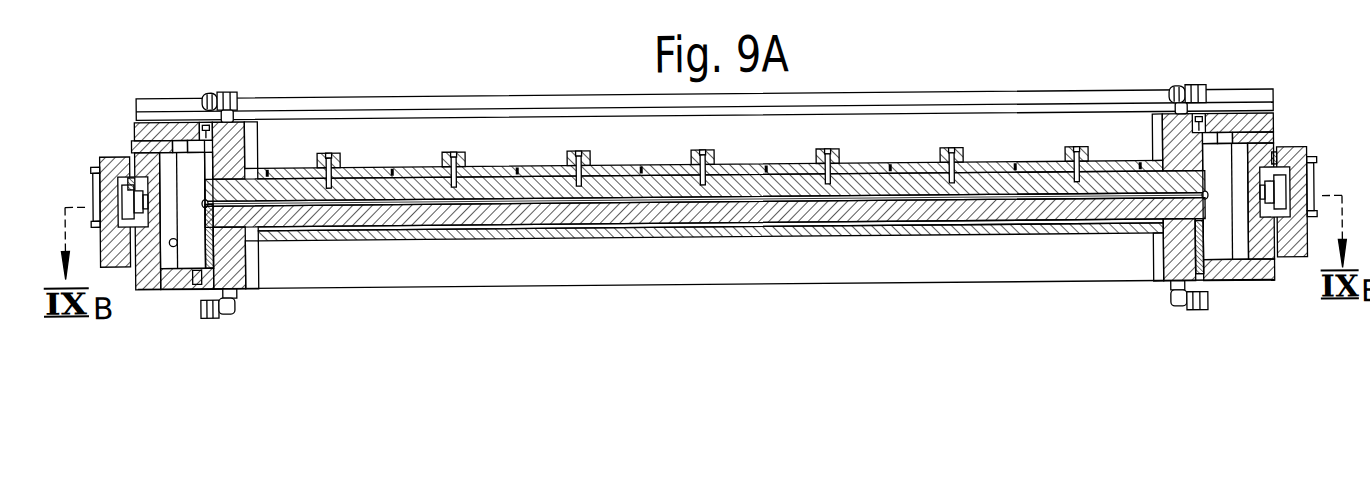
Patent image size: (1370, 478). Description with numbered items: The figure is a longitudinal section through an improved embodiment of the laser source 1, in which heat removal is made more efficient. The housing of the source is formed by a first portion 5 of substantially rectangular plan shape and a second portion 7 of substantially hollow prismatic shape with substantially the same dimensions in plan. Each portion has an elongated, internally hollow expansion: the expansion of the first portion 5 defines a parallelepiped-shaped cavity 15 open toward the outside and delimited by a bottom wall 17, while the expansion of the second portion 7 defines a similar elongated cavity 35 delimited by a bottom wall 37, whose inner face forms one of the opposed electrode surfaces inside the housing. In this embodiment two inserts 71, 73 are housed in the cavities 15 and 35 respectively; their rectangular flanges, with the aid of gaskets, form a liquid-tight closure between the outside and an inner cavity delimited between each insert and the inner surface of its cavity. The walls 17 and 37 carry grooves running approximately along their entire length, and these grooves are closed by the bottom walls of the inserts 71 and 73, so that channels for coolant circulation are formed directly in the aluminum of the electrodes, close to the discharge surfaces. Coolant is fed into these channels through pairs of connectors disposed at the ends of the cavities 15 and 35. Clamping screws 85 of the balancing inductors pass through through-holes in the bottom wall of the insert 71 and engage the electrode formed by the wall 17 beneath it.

The laser source 1 is at (1041, 81).
The first portion 5 is at (556, 134).
The second portion 7 is at (618, 289).
The cavity 15 is at (890, 162).
The bottom wall 17 is at (410, 187).
The cavity 35 is at (734, 247).
The bottom wall 37 is at (448, 215).
The insert 71 is at (245, 133).
The insert 73 is at (245, 261).
The clamping screws 85 is at (455, 148).